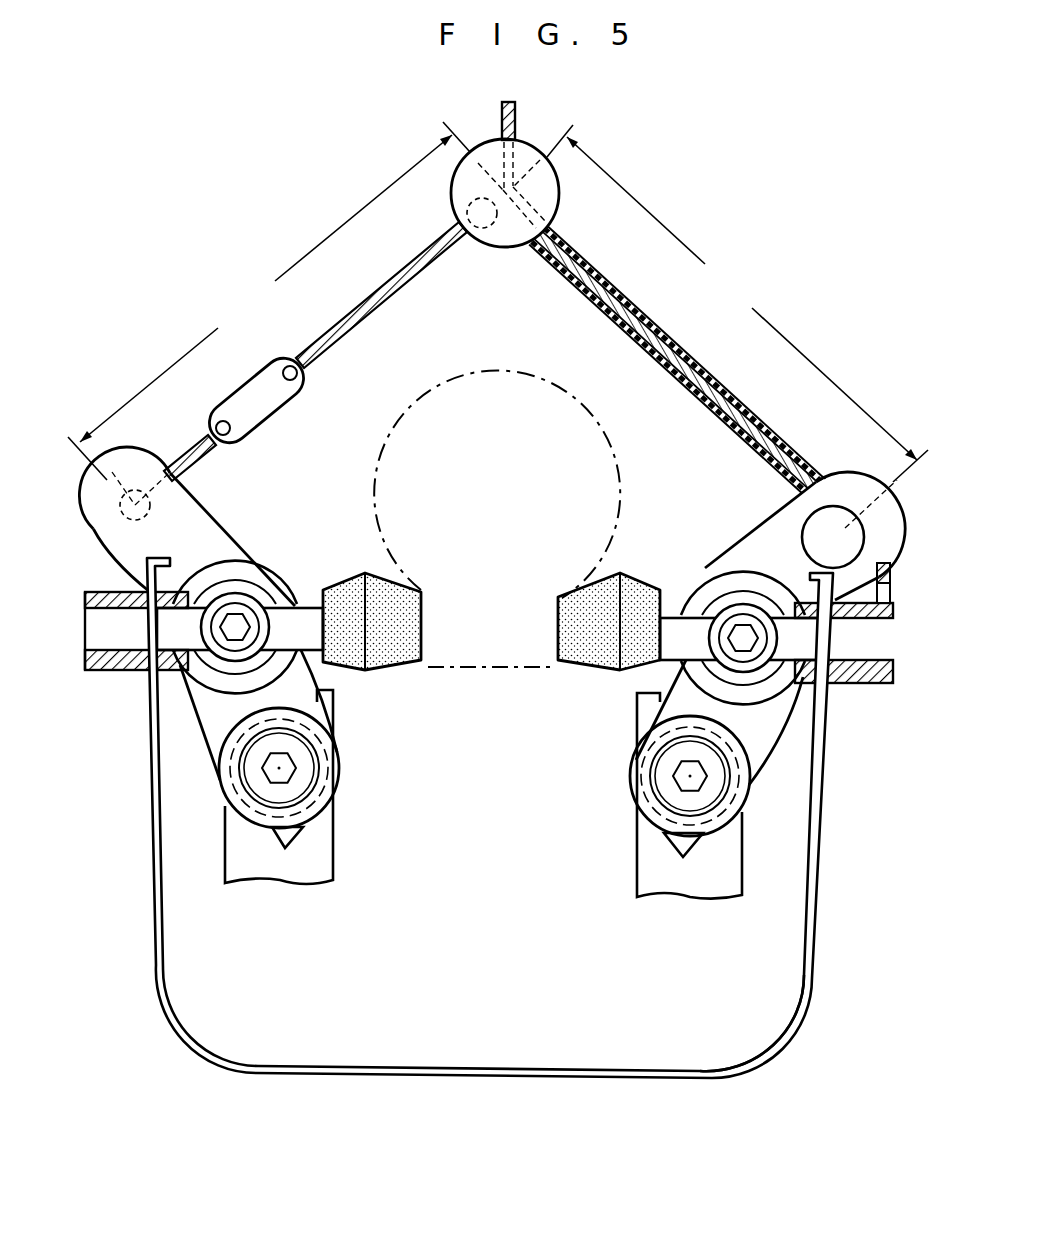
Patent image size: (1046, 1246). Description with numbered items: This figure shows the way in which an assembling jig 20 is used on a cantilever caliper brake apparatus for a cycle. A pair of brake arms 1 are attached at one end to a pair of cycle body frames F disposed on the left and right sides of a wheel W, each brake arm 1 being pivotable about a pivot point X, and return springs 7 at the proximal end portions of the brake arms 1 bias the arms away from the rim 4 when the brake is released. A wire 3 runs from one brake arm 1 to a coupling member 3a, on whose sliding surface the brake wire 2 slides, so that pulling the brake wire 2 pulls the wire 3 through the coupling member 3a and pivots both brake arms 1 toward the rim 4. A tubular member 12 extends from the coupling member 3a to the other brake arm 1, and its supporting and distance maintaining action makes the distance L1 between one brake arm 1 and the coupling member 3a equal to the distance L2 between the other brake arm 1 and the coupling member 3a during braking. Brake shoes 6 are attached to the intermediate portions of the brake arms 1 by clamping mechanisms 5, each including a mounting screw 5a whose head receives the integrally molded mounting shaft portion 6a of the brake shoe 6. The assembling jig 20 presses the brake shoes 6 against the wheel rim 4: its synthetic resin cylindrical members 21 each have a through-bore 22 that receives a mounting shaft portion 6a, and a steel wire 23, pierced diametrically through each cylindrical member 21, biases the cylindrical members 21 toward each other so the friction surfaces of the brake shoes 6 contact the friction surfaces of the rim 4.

The brake arm 1 is at (131, 467).
The brake wire 2 is at (516, 108).
The wire 3 is at (378, 293).
The coupling member 3a is at (506, 246).
The rim 4 is at (490, 670).
The clamping mechanism 5 is at (274, 583).
The mounting screw 5a is at (491, 716).
The brake shoe 6 is at (382, 660).
The mounting shaft portion 6a is at (175, 617).
The return spring 7 is at (330, 768).
The tubular member 12 is at (725, 370).
The assembling jig 20 is at (836, 881).
The cylindrical member 21 is at (107, 672).
The through-bore 22 is at (85, 617).
The steel wire 23 is at (806, 985).
The wheel W is at (543, 380).
The pivot point X is at (278, 768).
The cycle body frame F is at (312, 860).
The distance between one brake arm and the coupling member L1 is at (737, 303).
The distance between the other brake arm and the coupling member L2 is at (269, 301).